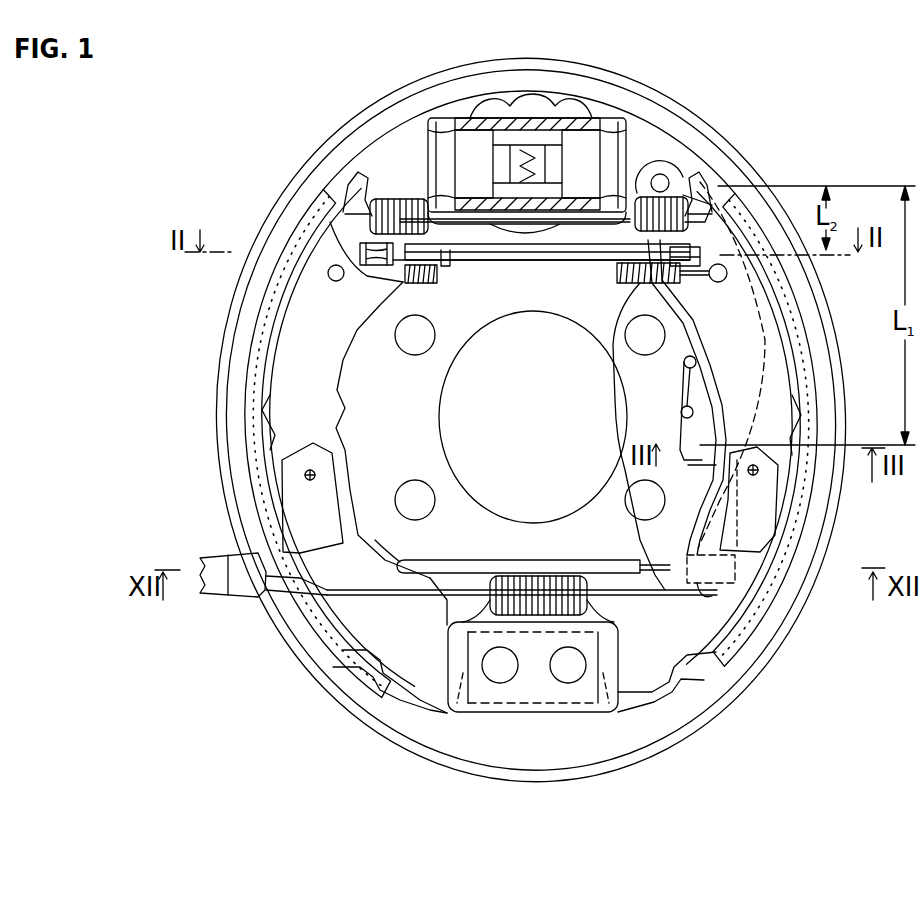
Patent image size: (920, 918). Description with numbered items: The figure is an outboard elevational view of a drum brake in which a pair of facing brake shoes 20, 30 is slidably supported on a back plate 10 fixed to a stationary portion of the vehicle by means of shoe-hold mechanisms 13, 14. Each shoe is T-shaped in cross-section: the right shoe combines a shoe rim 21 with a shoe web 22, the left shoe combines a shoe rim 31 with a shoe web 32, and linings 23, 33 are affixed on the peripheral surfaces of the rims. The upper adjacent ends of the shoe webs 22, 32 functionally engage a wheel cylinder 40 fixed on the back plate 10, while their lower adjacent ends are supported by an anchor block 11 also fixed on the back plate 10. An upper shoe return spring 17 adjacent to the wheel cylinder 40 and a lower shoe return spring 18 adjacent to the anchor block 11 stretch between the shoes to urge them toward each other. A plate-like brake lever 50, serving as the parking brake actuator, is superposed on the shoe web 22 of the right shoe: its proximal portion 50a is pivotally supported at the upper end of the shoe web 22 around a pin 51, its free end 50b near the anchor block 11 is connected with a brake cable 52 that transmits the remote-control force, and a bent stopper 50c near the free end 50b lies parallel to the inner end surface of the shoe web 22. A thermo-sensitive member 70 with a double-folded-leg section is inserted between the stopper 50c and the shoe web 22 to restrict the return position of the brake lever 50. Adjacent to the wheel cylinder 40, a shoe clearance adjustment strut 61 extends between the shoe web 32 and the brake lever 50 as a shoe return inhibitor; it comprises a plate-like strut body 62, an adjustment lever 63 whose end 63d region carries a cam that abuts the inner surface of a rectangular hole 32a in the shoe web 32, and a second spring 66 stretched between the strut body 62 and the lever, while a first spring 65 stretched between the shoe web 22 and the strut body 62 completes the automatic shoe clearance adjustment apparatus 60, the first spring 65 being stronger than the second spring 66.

The back plate 10 is at (755, 148).
The anchor block 11 is at (556, 716).
The shoe-hold mechanism 13 is at (778, 483).
The shoe-hold mechanism 14 is at (283, 492).
The upper shoe return spring 17 is at (390, 200).
The lower shoe return spring 18 is at (535, 614).
The brake shoe 20 is at (739, 431).
The shoe rim 21 is at (748, 642).
The shoe web 22 is at (765, 614).
The lining 23 is at (733, 684).
The brake shoe 30 is at (320, 449).
The shoe rim 31 is at (325, 665).
The shoe web 32 is at (300, 640).
The rectangular hole 32a is at (330, 222).
The lining 33 is at (340, 690).
The wheel cylinder 40 is at (535, 93).
The brake lever 50 is at (709, 338).
The proximal portion 50a is at (658, 120).
The free end 50b is at (690, 537).
The stopper 50c is at (700, 432).
The pin 51 is at (665, 170).
The brake cable 52 is at (485, 553).
The automatic shoe clearance adjustment apparatus 60 is at (504, 264).
The shoe clearance adjustment strut 61 is at (515, 264).
The strut body 62 is at (560, 264).
The adjustment lever 63 is at (485, 243).
The lever engaging end 63d is at (378, 250).
The first spring 65 is at (632, 285).
The second spring 66 is at (423, 285).
The thermo-sensitive member 70 is at (706, 398).